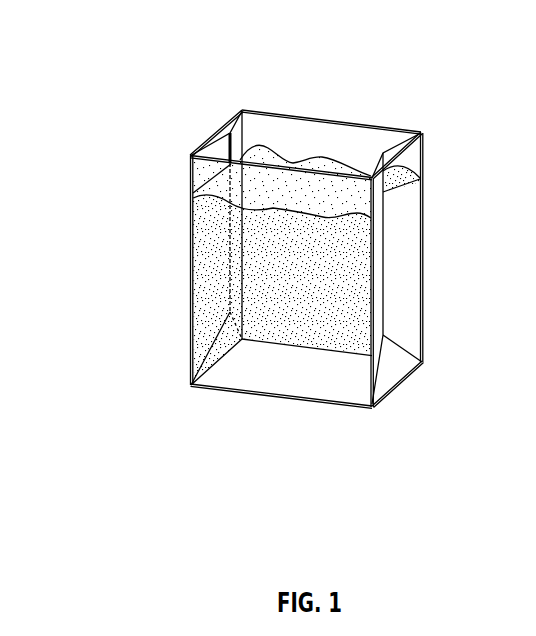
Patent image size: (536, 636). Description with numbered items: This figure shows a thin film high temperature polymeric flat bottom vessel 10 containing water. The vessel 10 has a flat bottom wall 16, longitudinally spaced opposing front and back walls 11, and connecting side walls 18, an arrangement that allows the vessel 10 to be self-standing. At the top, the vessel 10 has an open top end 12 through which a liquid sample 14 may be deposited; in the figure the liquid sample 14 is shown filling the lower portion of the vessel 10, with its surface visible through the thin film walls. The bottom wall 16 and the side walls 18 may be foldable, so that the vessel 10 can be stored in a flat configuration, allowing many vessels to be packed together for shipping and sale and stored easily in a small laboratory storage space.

The vessel 10 is at (117, 52).
The front and back walls 11 is at (225, 289).
The open top end 12 is at (325, 120).
The liquid sample 14 is at (310, 272).
The bottom wall 16 is at (390, 393).
The side walls 18 is at (383, 313).